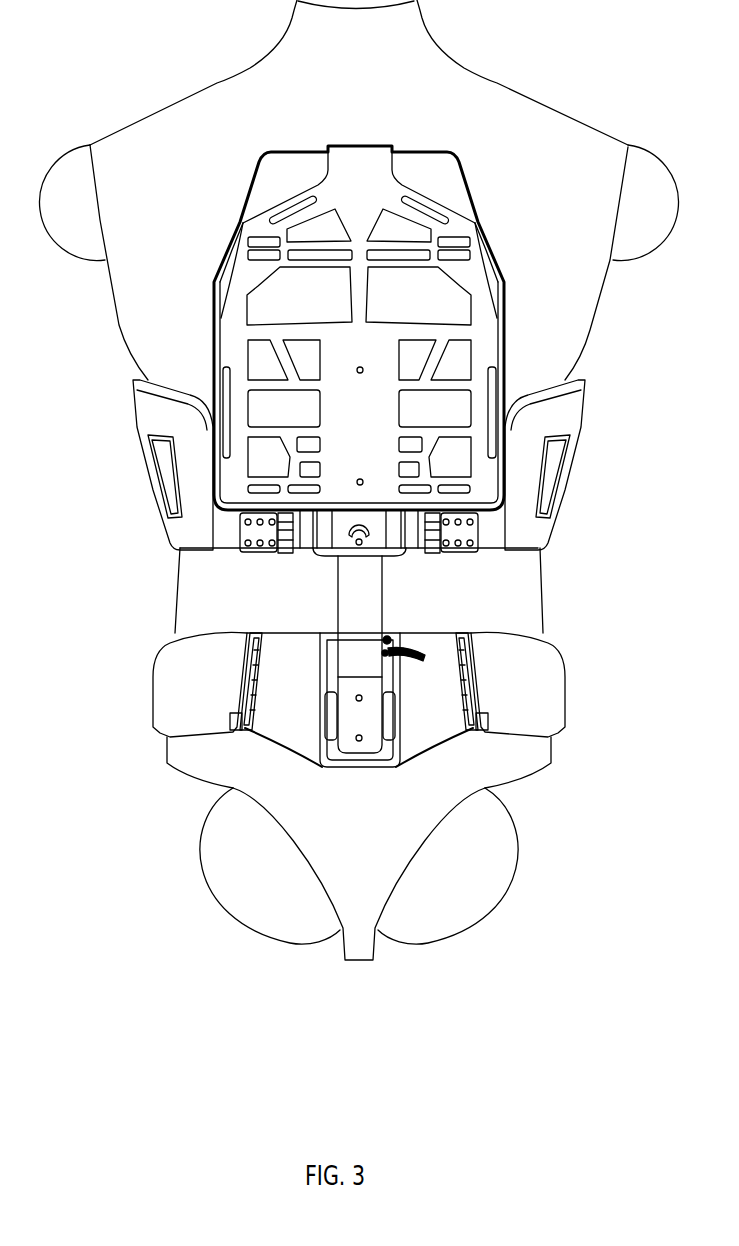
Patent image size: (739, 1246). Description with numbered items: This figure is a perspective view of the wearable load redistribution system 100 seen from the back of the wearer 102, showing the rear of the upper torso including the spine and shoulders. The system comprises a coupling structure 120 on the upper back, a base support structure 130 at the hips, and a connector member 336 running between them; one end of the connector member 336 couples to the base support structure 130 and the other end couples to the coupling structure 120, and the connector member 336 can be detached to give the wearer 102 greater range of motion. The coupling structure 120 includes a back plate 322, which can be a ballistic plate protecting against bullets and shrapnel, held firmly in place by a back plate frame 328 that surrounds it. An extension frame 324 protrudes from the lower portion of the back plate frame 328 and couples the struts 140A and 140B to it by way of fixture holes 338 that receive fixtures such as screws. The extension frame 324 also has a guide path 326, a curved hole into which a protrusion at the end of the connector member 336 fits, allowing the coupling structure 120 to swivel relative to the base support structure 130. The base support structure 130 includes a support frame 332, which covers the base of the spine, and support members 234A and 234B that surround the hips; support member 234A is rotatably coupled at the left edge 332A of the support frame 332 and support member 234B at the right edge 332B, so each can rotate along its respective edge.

The wearable load redistribution system 100 is at (87, 483).
The wearer 102 is at (528, 97).
The coupling structure 120 is at (335, 143).
The base support structure 130 is at (557, 657).
The strut 140A is at (148, 410).
The strut 140B is at (573, 410).
The support member 234A is at (168, 700).
The support member 234B is at (548, 702).
The back plate 322 is at (413, 163).
The extension frame 324 is at (337, 522).
The guide path 326 is at (357, 531).
The back plate frame 328 is at (358, 173).
The support frame 332 is at (307, 713).
The left edge 332A is at (240, 727).
The right edge 332B is at (480, 733).
The connector member 336 is at (372, 610).
The fixture holes 338 is at (467, 543).